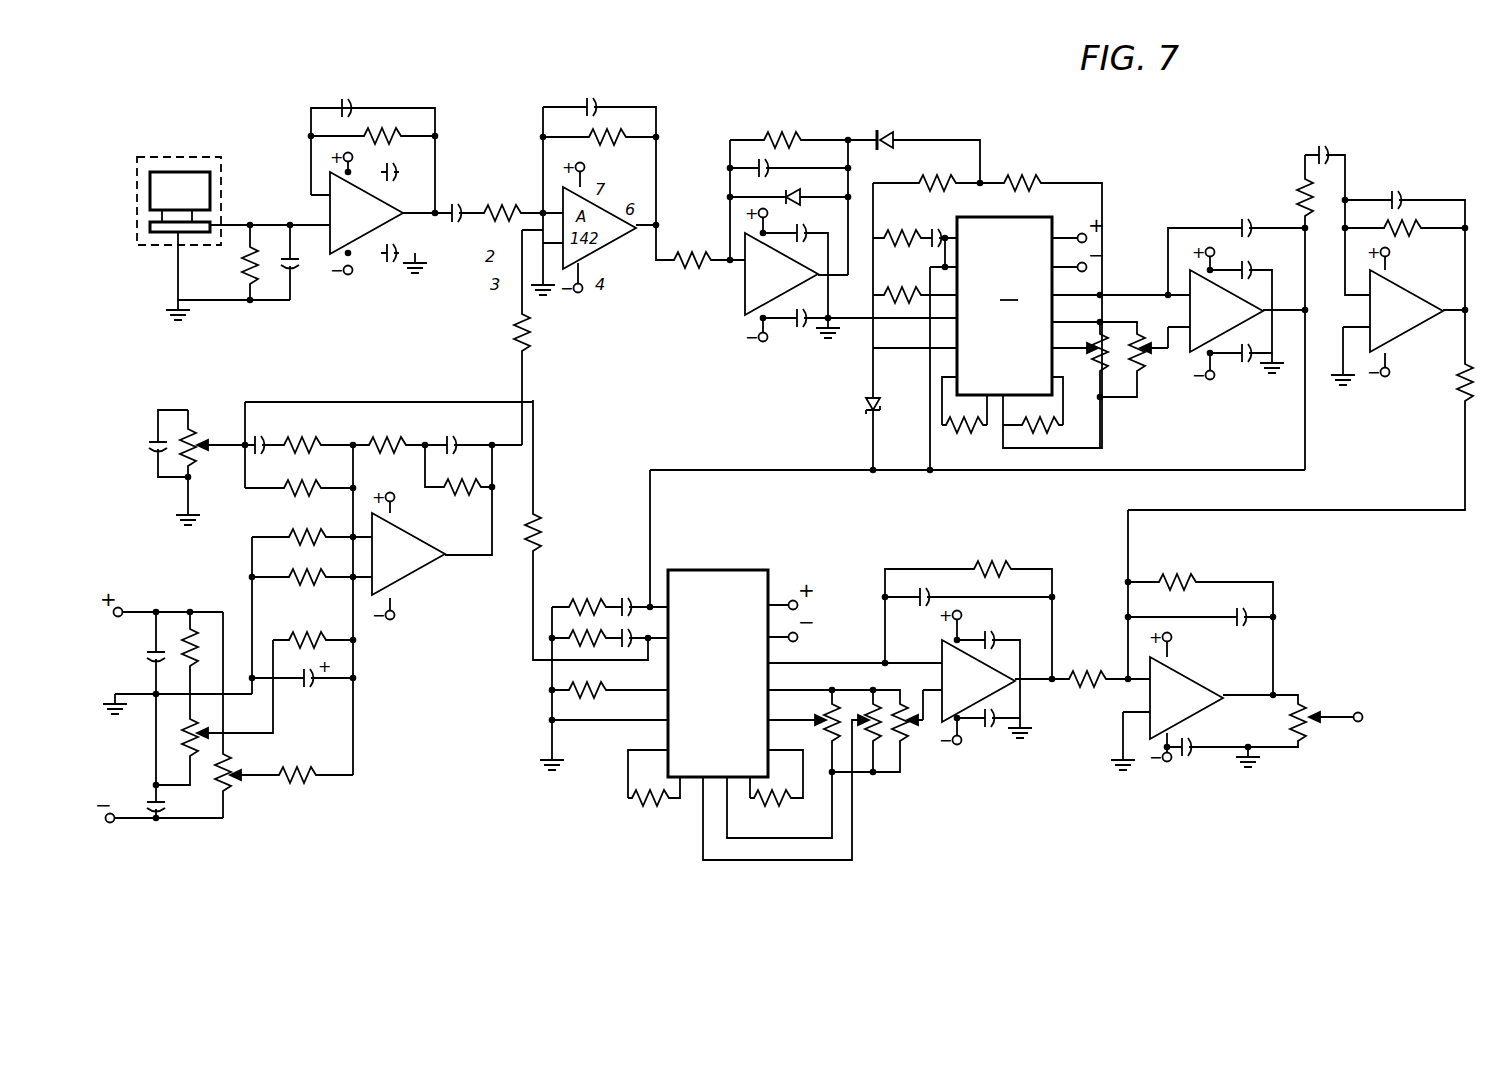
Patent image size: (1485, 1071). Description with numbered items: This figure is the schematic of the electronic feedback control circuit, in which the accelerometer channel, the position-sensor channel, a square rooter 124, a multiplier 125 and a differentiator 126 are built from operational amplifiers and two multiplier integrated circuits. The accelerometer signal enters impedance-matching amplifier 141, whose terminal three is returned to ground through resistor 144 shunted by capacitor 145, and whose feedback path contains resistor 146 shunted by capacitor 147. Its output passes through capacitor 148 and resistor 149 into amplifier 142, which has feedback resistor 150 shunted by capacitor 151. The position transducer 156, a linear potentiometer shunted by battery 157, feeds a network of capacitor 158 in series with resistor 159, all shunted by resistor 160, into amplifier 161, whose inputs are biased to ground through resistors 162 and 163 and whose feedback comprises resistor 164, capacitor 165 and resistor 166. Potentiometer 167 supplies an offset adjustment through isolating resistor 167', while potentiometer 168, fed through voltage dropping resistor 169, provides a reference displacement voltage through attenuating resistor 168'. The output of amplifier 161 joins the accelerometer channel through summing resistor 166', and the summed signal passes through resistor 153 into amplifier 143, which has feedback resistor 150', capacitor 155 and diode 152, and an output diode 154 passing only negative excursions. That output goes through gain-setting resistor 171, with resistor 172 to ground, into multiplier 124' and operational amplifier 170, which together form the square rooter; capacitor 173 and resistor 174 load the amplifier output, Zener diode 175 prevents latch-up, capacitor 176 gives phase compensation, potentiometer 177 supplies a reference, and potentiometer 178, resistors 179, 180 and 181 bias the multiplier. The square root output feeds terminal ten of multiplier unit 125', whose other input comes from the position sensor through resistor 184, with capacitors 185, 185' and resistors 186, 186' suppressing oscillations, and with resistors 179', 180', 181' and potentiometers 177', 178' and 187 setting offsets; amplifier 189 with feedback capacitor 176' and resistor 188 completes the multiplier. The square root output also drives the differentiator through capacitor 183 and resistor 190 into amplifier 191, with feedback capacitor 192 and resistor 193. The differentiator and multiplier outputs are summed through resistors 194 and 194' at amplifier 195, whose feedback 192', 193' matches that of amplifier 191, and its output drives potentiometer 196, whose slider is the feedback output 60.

The amplifier 142 is at (196, 156).
The resistor 144 is at (250, 268).
The capacitor 145 is at (300, 270).
The impedance-matching amplifier 141 is at (356, 219).
The resistor 146 is at (400, 130).
The capacitor 147 is at (348, 98).
The capacitor 148 is at (455, 203).
The resistor 149 is at (497, 205).
The capacitor 151 is at (592, 97).
The resistor 150 is at (651, 121).
The summing resistor 166' is at (492, 332).
The resistor 153 is at (690, 244).
The resistor 150' is at (781, 122).
The capacitor 155 is at (772, 166).
The diode 152 is at (798, 193).
The diode 154 is at (888, 132).
The amplifier 143 is at (760, 276).
The resistor 172 is at (940, 178).
The gain-setting resistor 171 is at (1008, 178).
The capacitor 173 is at (922, 232).
The resistor 174 is at (896, 247).
The resistor 181 is at (902, 307).
The Zener diode 175 is at (866, 408).
The multiplier 124' is at (1004, 306).
The square rooter 124 is at (1129, 192).
The resistor 180 is at (964, 441).
The resistor 179 is at (1052, 458).
The potentiometer 178 is at (1123, 386).
The potentiometer 177 is at (1156, 373).
The operational amplifier 170 is at (1206, 312).
The capacitor 176 is at (1241, 211).
The resistor 190 is at (1300, 185).
The perfect differentiator capacitor 183 is at (1330, 147).
The differentiator 126 is at (1410, 172).
The capacitor 192 is at (1422, 189).
The resistor 193 is at (1420, 218).
The operational amplifier 191 is at (1383, 295).
The summing resistor 194 is at (1439, 391).
The position transducer 156 is at (195, 425).
The battery 157 is at (150, 445).
The capacitor 158 is at (263, 430).
The resistor 159 is at (305, 432).
The resistor 160 is at (285, 495).
The resistor 164 is at (403, 435).
The capacitor 165 is at (452, 435).
The resistor 166 is at (455, 499).
The resistor 162 is at (326, 528).
The resistor 163 is at (305, 567).
The operational amplifier 161 is at (397, 544).
The attenuating resistor 168' is at (294, 627).
The voltage dropping resistor 169 is at (195, 630).
The potentiometer 168 is at (149, 737).
The potentiometer 167 is at (255, 764).
The isolating resistor 167' is at (310, 791).
The resistor 184 is at (540, 515).
The resistor 186 is at (581, 589).
The capacitor 185 is at (619, 574).
The resistor 186' is at (539, 649).
The capacitor 185' is at (556, 664).
The resistor 181' is at (547, 705).
The multiplier unit 125' is at (711, 657).
The multiplier 125 is at (849, 567).
The resistor 180' is at (630, 814).
The resistor 179' is at (781, 812).
The potentiometer 187 is at (826, 712).
The potentiometer 178' is at (889, 757).
The potentiometer 177' is at (929, 746).
The feedback capacitor 176' is at (920, 567).
The resistor 188 is at (995, 562).
The operational amplifier 189 is at (960, 679).
The summing resistor 194' is at (1088, 661).
The resistor 193' is at (1205, 567).
The capacitor 192' is at (1283, 604).
The amplifier 195 is at (1150, 704).
The potentiometer 196 is at (1305, 705).
The feedback output 60 is at (1365, 714).